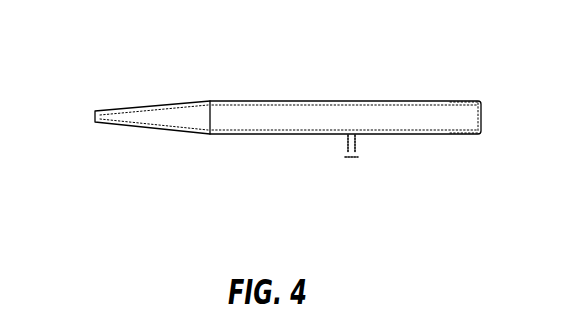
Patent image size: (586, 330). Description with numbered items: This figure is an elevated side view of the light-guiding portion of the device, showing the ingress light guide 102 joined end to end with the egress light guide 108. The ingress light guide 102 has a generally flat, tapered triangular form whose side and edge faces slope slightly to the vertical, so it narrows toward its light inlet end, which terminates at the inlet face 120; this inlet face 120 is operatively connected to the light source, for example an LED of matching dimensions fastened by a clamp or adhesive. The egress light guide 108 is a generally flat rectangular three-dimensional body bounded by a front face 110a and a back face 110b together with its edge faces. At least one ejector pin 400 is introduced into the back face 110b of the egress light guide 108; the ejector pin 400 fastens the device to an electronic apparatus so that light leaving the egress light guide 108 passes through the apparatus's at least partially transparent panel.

The ingress light guide 102 is at (127, 64).
The egress light guide 108 is at (325, 65).
The inlet face 120 is at (93, 118).
The front face 110a is at (443, 101).
The back face 110b is at (443, 134).
The ejector pin 400 is at (346, 136).